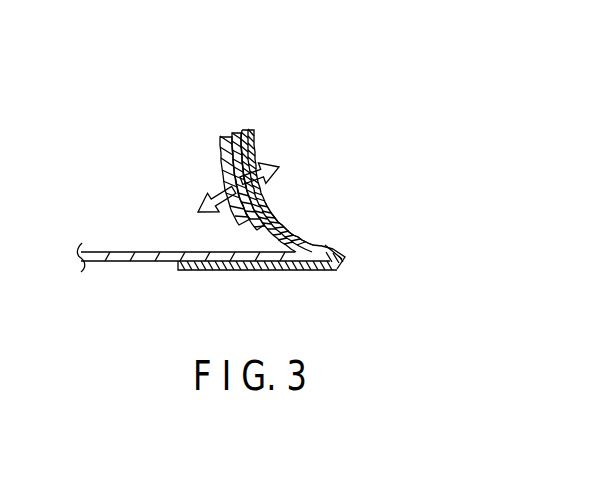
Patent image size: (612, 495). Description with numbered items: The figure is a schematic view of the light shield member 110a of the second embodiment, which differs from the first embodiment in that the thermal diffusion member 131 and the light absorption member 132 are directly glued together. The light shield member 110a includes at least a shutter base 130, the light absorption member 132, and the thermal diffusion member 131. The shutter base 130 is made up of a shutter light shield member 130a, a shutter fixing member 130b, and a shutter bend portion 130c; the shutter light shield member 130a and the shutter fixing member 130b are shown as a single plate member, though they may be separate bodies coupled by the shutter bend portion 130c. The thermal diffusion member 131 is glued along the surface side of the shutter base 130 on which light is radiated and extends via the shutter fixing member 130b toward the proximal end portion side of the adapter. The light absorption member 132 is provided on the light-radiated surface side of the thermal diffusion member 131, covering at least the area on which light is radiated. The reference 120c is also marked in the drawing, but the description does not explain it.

The shutter base 130 is at (254, 128).
The shutter light shield member 130a is at (312, 192).
The shutter fixing member 130b is at (258, 274).
The shutter bend portion 130c is at (346, 258).
The thermal diffusion member 131 is at (241, 132).
The light absorption member 132 is at (222, 150).
The light shield member 110a is at (352, 139).
The mating portion 120c is at (357, 208).